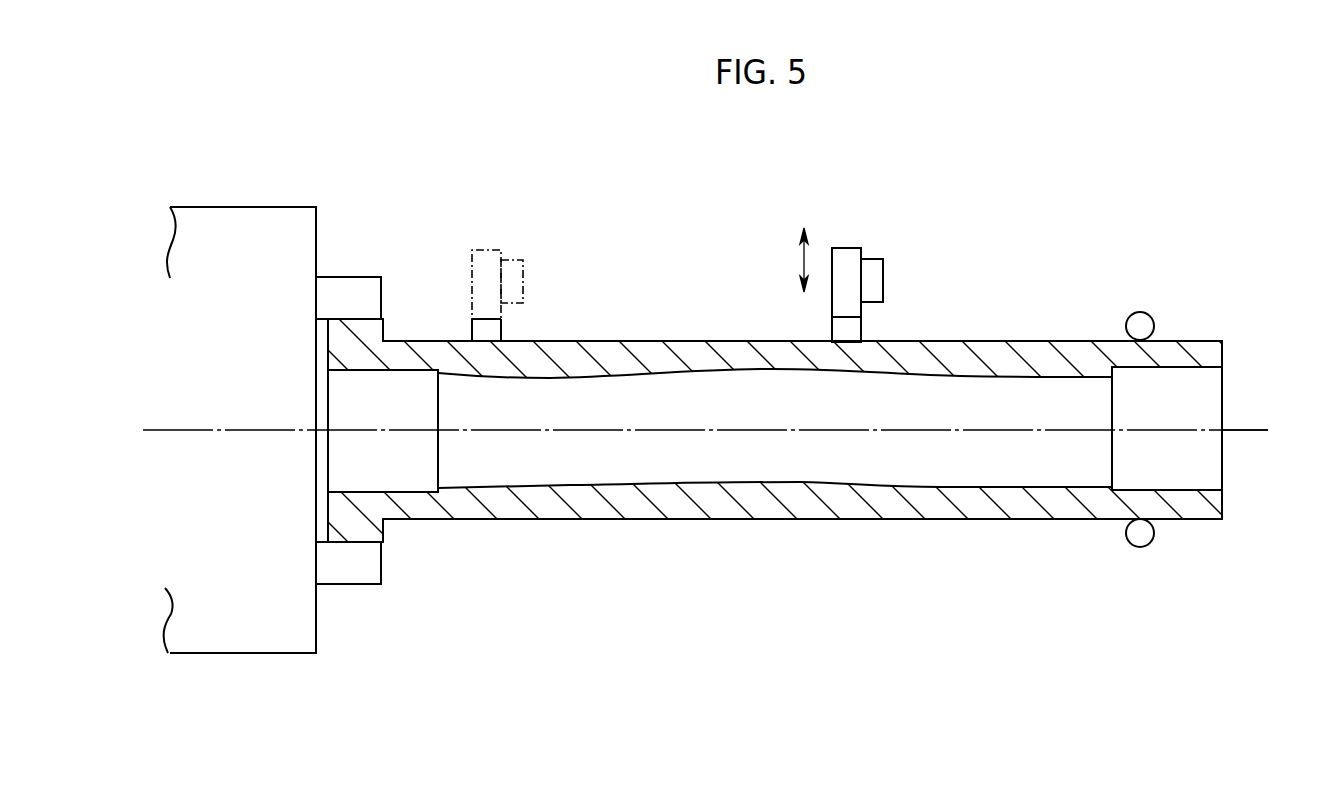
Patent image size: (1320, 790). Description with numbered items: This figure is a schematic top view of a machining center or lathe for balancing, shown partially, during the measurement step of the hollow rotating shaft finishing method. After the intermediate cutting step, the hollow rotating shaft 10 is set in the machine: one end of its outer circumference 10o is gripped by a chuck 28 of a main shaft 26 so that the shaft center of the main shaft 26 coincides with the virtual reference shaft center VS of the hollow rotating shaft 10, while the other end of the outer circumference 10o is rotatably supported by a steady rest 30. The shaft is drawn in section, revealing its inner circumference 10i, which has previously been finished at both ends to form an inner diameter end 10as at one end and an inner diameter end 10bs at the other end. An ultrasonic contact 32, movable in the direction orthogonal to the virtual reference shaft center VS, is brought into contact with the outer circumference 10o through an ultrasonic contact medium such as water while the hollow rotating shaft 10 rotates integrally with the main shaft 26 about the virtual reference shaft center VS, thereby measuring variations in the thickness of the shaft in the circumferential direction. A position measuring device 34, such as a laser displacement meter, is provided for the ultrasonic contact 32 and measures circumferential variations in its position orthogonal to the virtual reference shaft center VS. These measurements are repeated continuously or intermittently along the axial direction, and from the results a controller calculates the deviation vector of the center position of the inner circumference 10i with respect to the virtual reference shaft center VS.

The hollow rotating shaft 10 is at (666, 422).
The outer circumference 10o is at (618, 341).
The inner circumference 10i is at (582, 487).
The inner diameter end 10as is at (405, 490).
The inner diameter end 10bs is at (1188, 490).
The main shaft 26 is at (240, 213).
The chuck 28 is at (356, 283).
The steady rest 30 is at (1140, 311).
The ultrasonic contact 32 is at (487, 247).
The position measuring device 34 is at (518, 262).
The virtual reference shaft center VS is at (1250, 428).